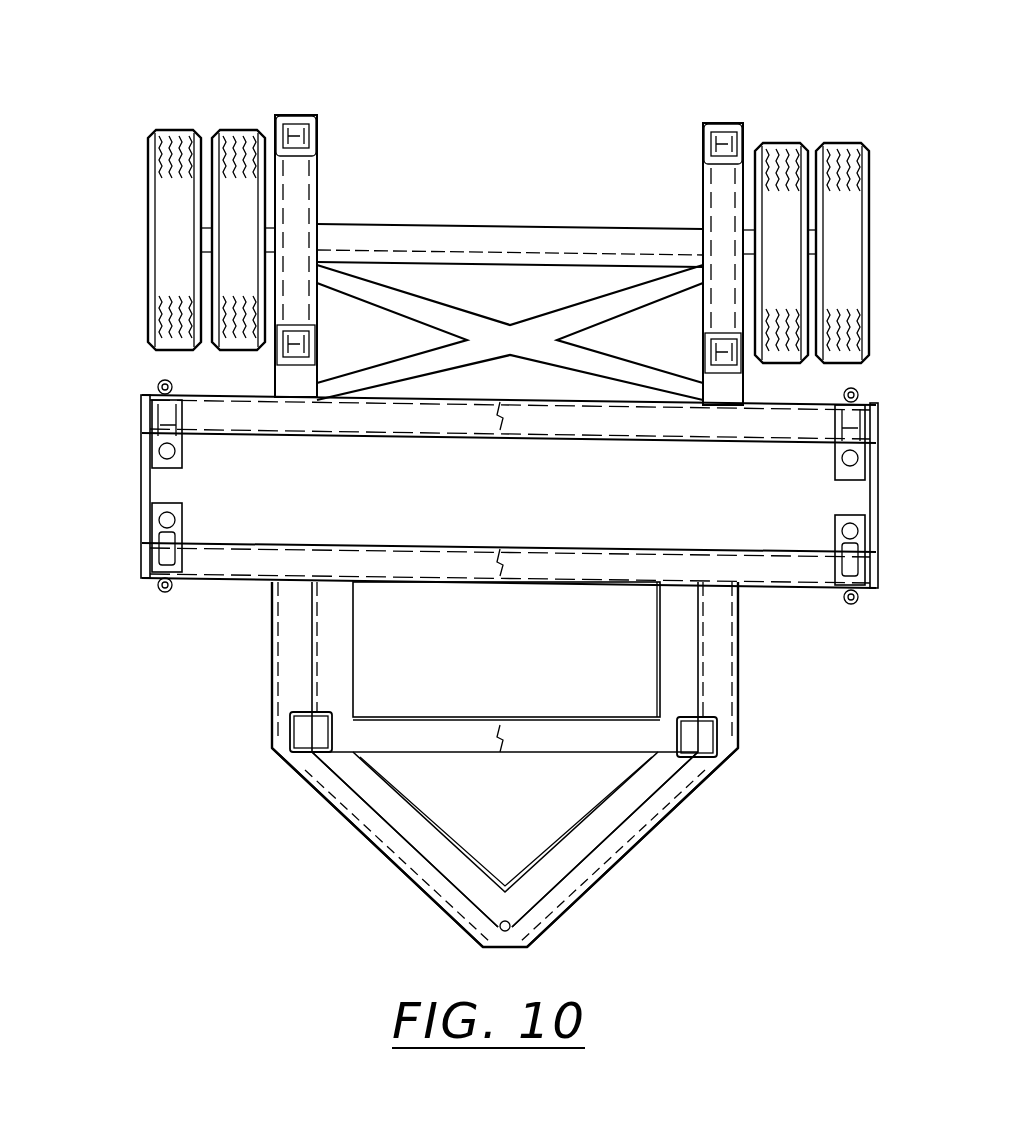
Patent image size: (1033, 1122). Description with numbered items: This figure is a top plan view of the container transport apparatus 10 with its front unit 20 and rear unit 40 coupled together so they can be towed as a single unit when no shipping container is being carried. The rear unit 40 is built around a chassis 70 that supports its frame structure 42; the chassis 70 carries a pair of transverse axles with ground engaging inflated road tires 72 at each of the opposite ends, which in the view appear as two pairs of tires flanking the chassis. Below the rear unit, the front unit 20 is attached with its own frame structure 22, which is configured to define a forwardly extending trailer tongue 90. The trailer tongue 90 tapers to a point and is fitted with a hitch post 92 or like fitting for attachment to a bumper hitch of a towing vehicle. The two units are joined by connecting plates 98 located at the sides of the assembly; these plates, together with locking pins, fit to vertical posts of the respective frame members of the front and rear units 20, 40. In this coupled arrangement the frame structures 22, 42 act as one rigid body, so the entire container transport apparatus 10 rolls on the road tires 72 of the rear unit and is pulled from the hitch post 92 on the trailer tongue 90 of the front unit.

The container transport apparatus 10 is at (509, 210).
The front unit 20 is at (258, 673).
The frame structure 22 is at (662, 826).
The rear unit 40 is at (420, 438).
The frame structure 42 is at (653, 440).
The chassis 70 is at (530, 237).
The road tires 72 is at (237, 130).
The trailer tongue 90 is at (407, 845).
The hitch post 92 is at (510, 930).
The connecting plates 98 is at (145, 478).